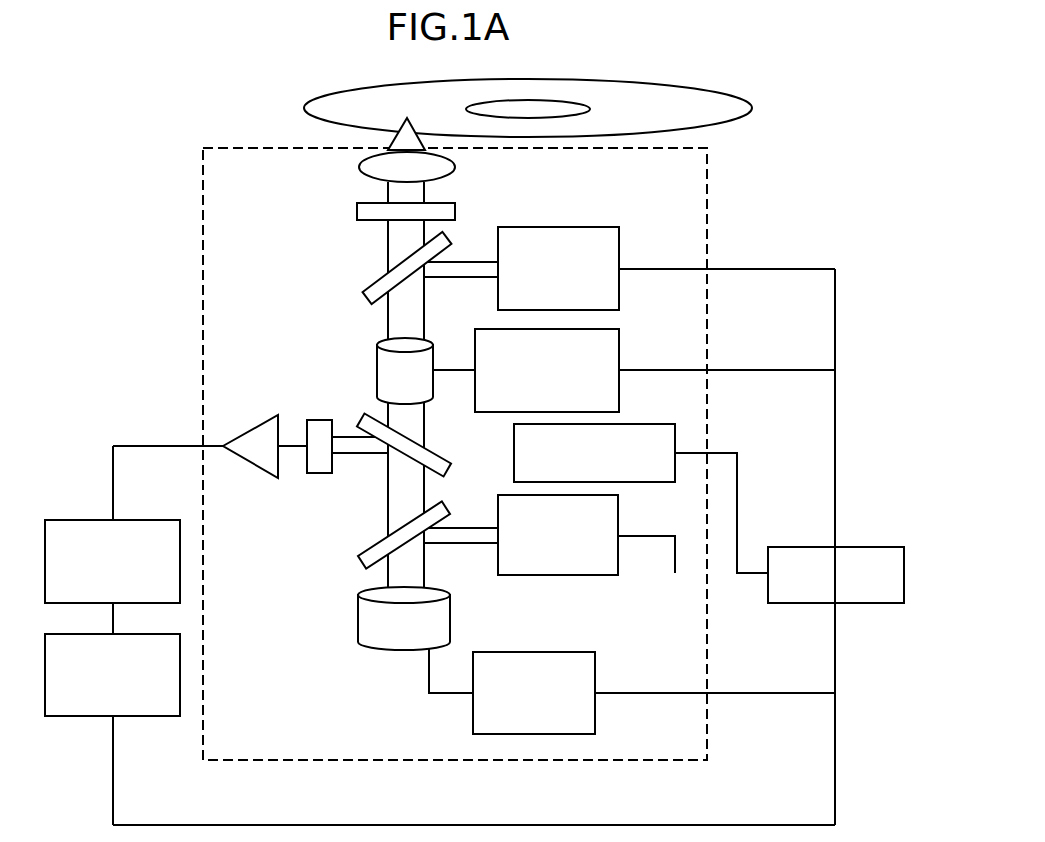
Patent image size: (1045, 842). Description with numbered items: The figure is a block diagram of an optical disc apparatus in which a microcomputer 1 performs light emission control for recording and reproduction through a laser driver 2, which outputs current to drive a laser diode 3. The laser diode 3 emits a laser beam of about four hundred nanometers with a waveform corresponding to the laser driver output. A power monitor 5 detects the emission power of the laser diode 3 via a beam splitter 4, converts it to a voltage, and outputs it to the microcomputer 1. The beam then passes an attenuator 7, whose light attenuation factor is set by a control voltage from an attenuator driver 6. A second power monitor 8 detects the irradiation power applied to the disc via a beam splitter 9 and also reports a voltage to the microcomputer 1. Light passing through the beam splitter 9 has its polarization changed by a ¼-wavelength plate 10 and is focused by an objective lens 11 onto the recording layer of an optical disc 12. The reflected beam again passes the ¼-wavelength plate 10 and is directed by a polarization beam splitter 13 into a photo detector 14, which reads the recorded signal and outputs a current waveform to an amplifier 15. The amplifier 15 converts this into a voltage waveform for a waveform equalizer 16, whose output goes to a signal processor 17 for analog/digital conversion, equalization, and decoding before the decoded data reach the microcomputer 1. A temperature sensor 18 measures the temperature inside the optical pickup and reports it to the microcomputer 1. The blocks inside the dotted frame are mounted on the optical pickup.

The microcomputer 1 is at (858, 547).
The laser driver 2 is at (596, 682).
The laser diode 3 is at (358, 613).
The beam splitter 4 is at (369, 546).
The power monitor 5 is at (619, 525).
The attenuator driver 6 is at (620, 358).
The attenuator 7 is at (377, 370).
The power monitor 8 is at (620, 256).
The beam splitter 9 is at (370, 286).
The ¼-wavelength plate 10 is at (357, 210).
The objective lens 11 is at (359, 167).
The optical disc 12 is at (752, 107).
The polarization beam splitter 13 is at (430, 452).
The photo detector 14 is at (318, 474).
The amplifier 15 is at (248, 465).
The waveform equalizer 16 is at (100, 520).
The signal processor 17 is at (100, 717).
The temperature sensor 18 is at (651, 424).